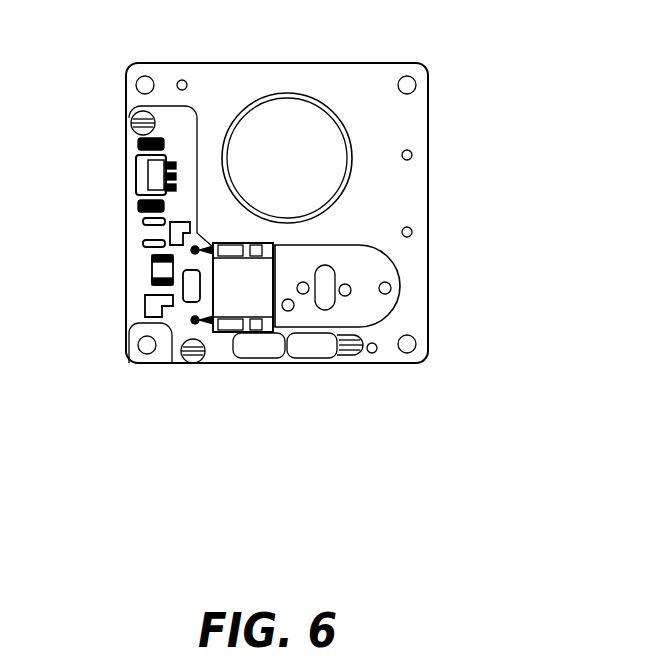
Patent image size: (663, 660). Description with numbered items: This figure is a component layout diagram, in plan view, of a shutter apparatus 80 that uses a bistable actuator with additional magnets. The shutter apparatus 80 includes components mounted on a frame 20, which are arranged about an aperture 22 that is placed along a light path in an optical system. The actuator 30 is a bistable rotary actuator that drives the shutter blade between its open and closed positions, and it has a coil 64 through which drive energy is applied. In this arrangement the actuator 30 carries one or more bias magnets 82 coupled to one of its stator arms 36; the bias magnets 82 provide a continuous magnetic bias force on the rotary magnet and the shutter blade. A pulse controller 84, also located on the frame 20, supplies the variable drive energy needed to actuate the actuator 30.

The shutter apparatus 80 is at (93, 32).
The frame 20 is at (411, 152).
The aperture 22 is at (292, 168).
The actuator 30 is at (367, 262).
The stator arm 36 is at (325, 323).
The coil 64 is at (246, 278).
The bias magnet 82 is at (307, 352).
The pulse controller 84 is at (152, 271).